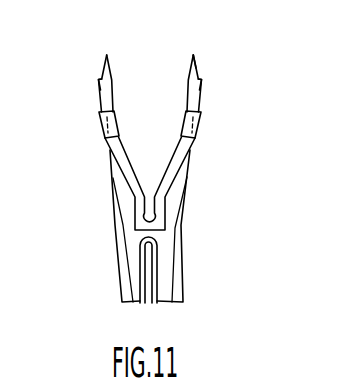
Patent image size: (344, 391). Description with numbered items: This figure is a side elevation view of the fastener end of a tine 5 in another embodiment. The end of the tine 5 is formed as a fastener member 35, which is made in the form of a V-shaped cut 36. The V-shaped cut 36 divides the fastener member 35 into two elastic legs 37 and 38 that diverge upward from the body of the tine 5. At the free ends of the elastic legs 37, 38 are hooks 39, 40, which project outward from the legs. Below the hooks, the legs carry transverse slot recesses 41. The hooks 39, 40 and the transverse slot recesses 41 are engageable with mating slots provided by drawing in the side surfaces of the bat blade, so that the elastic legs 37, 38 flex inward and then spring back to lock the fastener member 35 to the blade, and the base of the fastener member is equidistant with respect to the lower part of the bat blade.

The tine 5 is at (165, 258).
The fastener member 35 is at (197, 58).
The V-shaped cut 36 is at (156, 153).
The elastic leg 37 is at (189, 92).
The elastic leg 38 is at (112, 82).
The hook 39 is at (100, 78).
The hook 40 is at (205, 80).
The transverse slot recess 41 is at (101, 97).